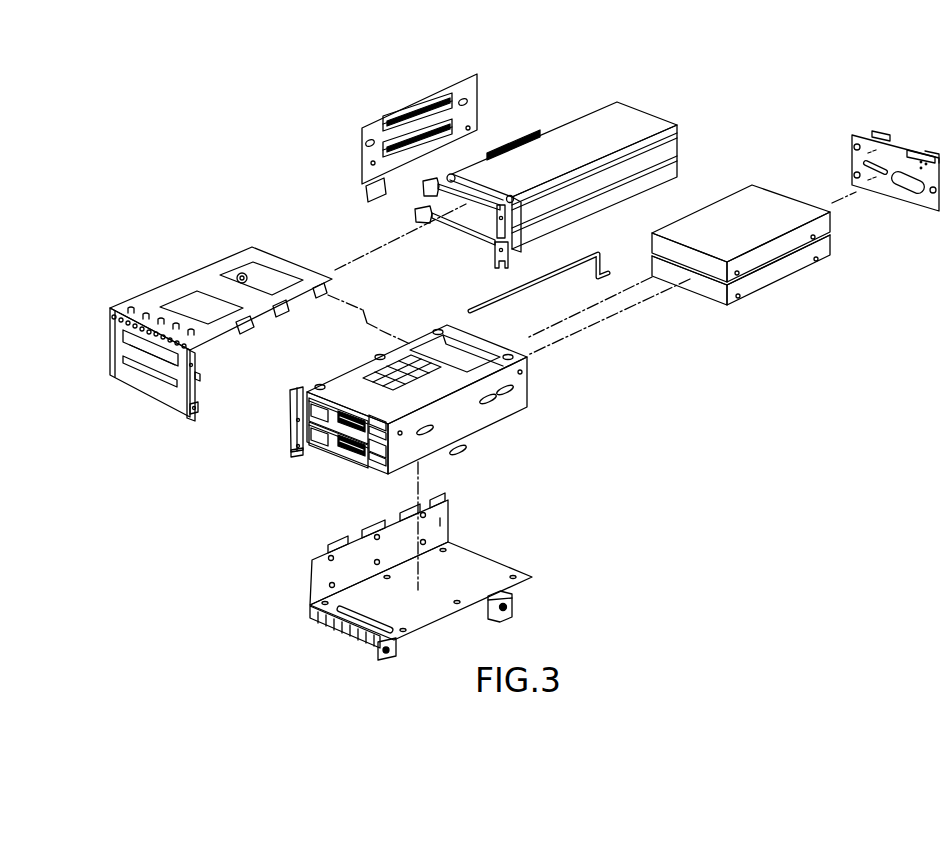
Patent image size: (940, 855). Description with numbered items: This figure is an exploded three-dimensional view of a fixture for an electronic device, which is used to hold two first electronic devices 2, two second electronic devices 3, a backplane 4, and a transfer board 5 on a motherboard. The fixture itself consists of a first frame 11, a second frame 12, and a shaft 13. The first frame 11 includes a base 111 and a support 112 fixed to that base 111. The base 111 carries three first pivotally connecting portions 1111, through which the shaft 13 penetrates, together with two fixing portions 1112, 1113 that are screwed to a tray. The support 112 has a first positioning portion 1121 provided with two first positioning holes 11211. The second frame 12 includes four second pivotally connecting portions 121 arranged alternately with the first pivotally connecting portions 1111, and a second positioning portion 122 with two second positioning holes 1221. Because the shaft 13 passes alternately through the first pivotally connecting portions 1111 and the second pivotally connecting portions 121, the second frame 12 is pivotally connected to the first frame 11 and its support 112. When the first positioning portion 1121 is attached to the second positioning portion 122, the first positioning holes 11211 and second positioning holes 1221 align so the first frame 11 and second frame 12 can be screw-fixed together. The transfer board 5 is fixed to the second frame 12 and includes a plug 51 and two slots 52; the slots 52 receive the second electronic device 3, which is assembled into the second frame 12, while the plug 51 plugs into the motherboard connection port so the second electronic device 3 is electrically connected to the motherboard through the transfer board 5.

The first electronic device 2 is at (772, 200).
The second electronic device 3 is at (641, 121).
The backplane 4 is at (898, 156).
The transfer board 5 is at (490, 101).
The plug 51 is at (397, 186).
The slot 52 is at (404, 105).
The first frame 11 is at (600, 396).
The base 111 is at (483, 563).
The first pivotally connecting portion 1111 is at (327, 543).
The fixing portion 1112 is at (514, 597).
The fixing portion 1113 is at (377, 652).
The support 112 is at (527, 392).
The first positioning portion 1121 is at (283, 441).
The first positioning hole 11211 is at (297, 454).
The second frame 12 is at (203, 278).
The second pivotally connecting portion 121 is at (243, 331).
The second positioning portion 122 is at (178, 417).
The second positioning hole 1221 is at (196, 403).
The shaft 13 is at (606, 250).